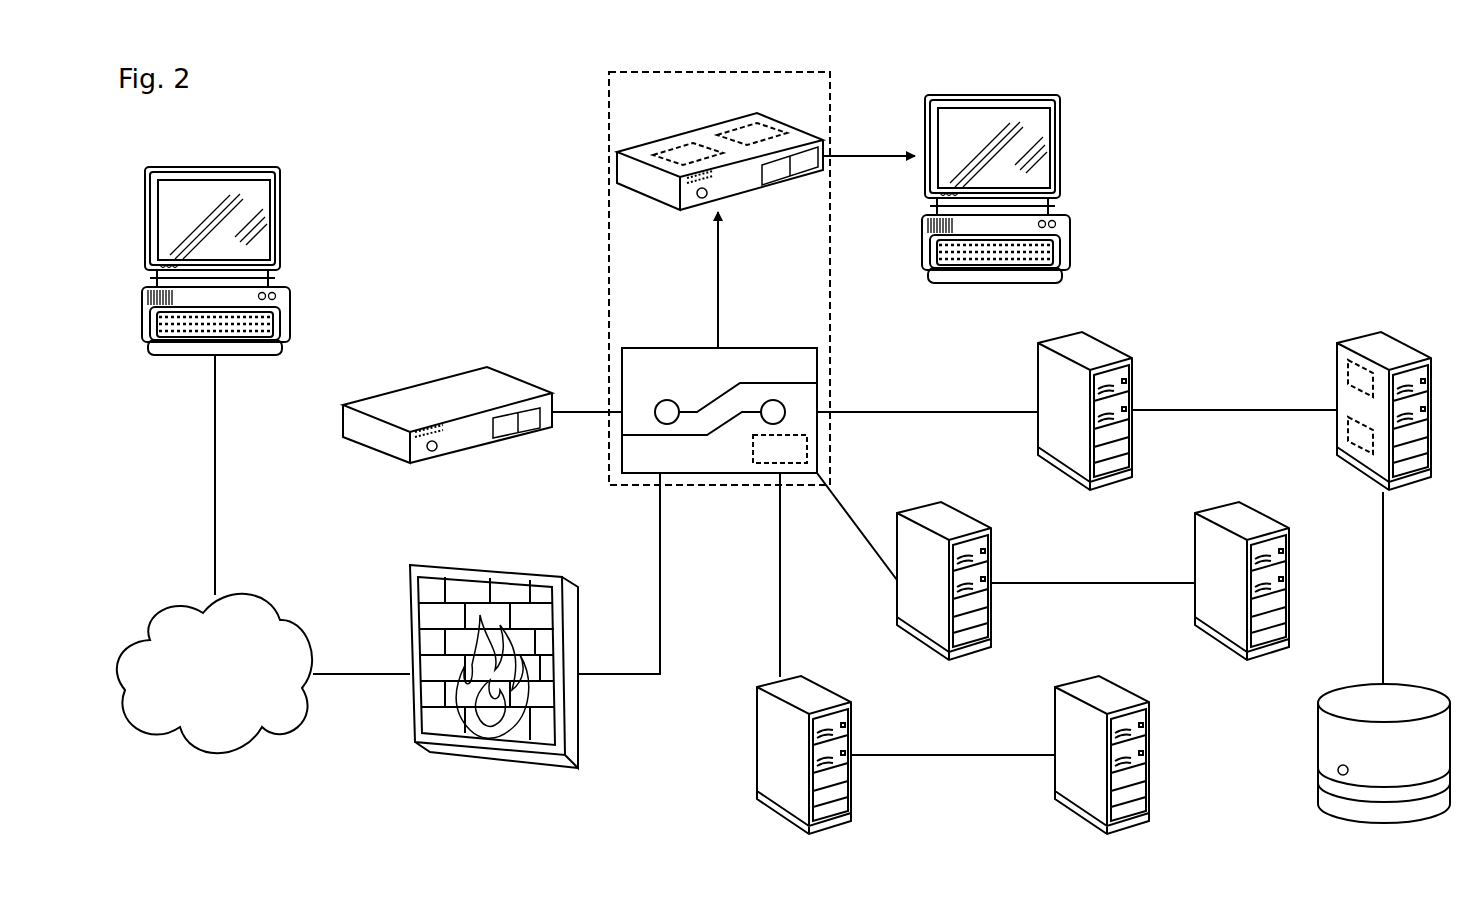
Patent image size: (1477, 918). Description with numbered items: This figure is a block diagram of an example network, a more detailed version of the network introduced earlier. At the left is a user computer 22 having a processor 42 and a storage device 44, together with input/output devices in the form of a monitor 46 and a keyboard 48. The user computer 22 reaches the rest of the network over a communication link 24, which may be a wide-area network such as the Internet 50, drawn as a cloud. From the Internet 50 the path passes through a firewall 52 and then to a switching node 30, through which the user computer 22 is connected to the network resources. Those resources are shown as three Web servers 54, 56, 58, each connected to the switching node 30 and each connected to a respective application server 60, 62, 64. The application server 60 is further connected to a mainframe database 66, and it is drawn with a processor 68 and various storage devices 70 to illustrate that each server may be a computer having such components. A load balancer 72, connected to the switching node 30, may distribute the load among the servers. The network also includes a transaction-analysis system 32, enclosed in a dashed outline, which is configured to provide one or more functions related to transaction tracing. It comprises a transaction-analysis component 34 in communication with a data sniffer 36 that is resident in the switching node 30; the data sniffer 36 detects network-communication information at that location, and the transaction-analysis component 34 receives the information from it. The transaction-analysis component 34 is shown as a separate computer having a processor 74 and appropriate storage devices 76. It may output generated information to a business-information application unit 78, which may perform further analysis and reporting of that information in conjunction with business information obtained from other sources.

The user computer 22 is at (248, 270).
The communication link 24 is at (232, 598).
The switching node 30 is at (723, 394).
The transaction-analysis system 32 is at (603, 163).
The transaction-analysis component 34 is at (720, 144).
The data sniffer 36 is at (752, 456).
The processor 42 is at (248, 305).
The storage device 44 is at (252, 352).
The monitor 46 is at (208, 201).
The keyboard 48 is at (215, 355).
The Internet 50 is at (214, 658).
The firewall 52 is at (515, 580).
The Web server 54 is at (1095, 345).
The Web server 56 is at (955, 525).
The Web server 58 is at (810, 695).
The application server 60 is at (1368, 396).
The application server 62 is at (1250, 522).
The application server 64 is at (1110, 695).
The mainframe database 66 is at (1405, 700).
The processor 68 is at (1345, 371).
The storage devices 70 is at (1342, 434).
The load balancer 72 is at (495, 385).
The processor 74 is at (672, 143).
The storage devices 76 is at (767, 116).
The business-information application unit 78 is at (1013, 98).